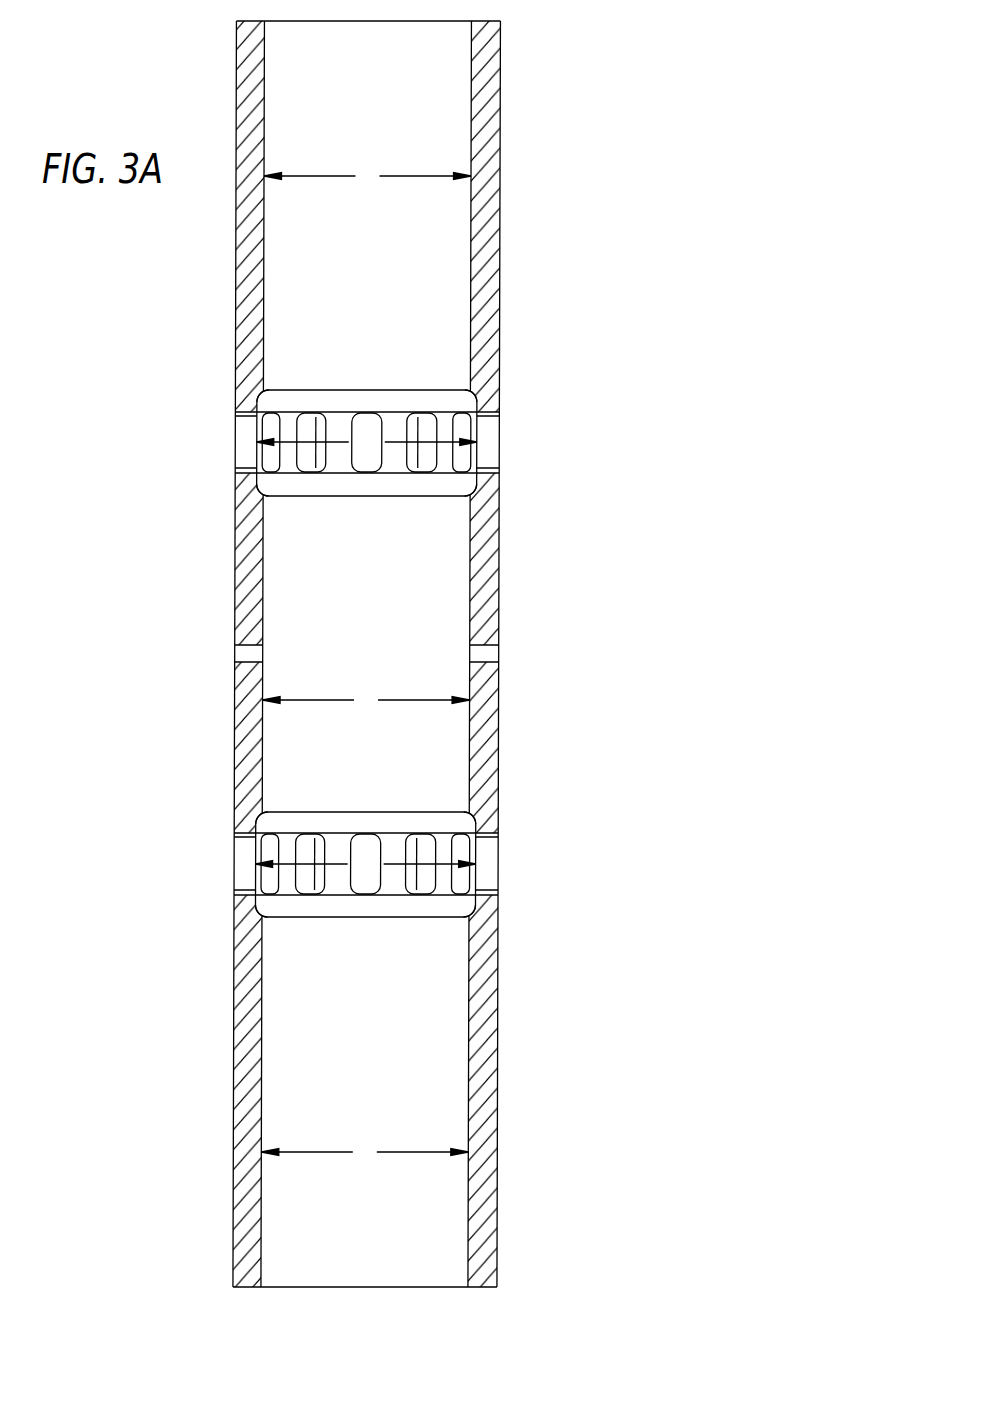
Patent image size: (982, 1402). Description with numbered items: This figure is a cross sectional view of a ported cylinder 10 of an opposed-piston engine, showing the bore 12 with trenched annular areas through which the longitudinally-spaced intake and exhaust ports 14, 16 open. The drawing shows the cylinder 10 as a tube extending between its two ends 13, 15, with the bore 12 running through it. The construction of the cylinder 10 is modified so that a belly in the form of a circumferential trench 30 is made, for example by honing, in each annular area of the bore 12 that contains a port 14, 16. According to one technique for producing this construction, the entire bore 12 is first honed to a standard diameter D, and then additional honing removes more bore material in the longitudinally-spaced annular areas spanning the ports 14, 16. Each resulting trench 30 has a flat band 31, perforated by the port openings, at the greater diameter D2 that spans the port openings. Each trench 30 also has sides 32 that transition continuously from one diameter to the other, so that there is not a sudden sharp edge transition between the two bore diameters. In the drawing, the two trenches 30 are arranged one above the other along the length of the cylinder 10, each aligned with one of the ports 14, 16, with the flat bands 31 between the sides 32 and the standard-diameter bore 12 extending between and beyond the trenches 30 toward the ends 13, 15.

The cylinder 10 is at (502, 128).
The bore 12 is at (383, 113).
The first end of housing 13 is at (522, 13).
The port 14 is at (522, 439).
The second end of housing 15 is at (535, 1278).
The port 16 is at (522, 859).
The circumferential trench 30 is at (413, 372).
The flat band 31 is at (285, 460).
The sides 32 is at (268, 400).